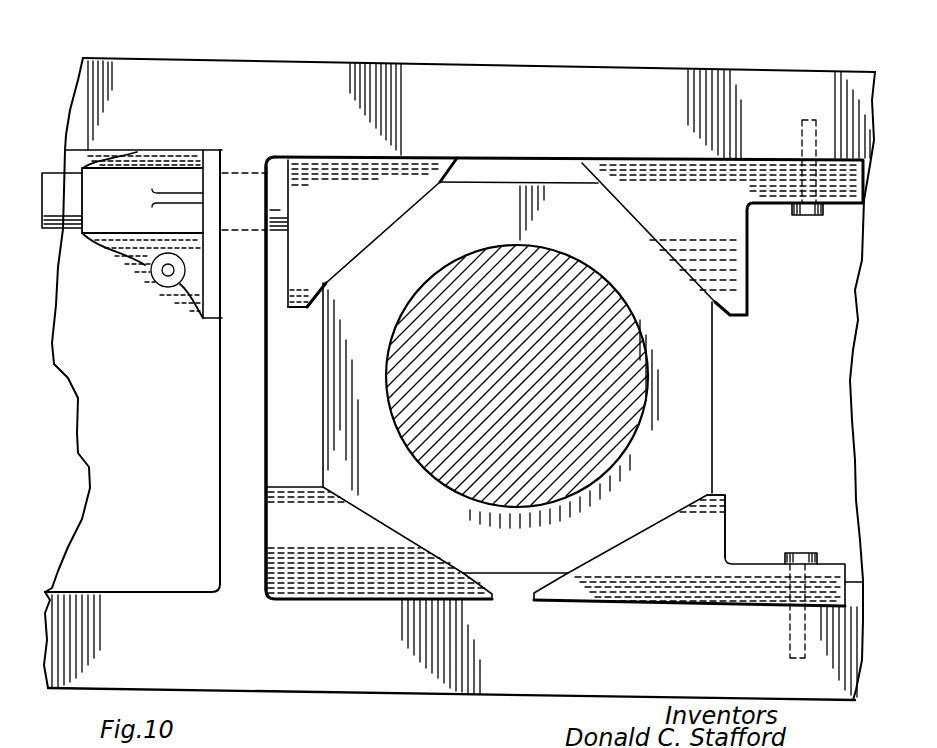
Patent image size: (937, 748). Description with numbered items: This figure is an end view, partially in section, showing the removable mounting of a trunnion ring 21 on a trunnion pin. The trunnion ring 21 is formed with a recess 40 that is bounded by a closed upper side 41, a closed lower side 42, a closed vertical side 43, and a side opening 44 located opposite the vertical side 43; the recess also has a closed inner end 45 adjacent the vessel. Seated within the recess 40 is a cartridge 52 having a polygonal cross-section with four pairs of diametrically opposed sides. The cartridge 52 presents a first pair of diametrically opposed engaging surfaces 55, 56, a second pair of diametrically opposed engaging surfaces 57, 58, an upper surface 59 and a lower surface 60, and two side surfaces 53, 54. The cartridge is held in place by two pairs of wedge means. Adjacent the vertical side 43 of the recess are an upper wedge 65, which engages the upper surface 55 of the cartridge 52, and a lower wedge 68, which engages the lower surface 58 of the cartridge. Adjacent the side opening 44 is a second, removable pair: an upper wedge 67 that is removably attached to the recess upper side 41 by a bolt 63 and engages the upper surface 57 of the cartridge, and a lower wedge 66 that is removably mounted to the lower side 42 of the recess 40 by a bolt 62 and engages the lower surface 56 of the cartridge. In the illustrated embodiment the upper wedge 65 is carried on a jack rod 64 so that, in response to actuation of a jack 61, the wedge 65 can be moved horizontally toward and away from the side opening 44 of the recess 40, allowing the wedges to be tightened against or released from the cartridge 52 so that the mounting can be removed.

The trunnion ring 21 is at (622, 66).
The recess 40 is at (286, 344).
The upper side of recess 41 is at (550, 166).
The lower side of recess 42 is at (503, 599).
The vertical side of recess 43 is at (265, 425).
The side opening of recess 44 is at (718, 475).
The closed inner end of recess 45 is at (300, 476).
The cartridge 52 is at (714, 394).
The side surface of cartridge 53 is at (322, 395).
The side surface of cartridge 54 is at (714, 355).
The engaging surface of cartridge 55 is at (398, 216).
The engaging surface of cartridge 56 is at (648, 530).
The engaging surface of cartridge 57 is at (633, 214).
The engaging surface of cartridge 58 is at (430, 556).
The upper surface of cartridge 59 is at (484, 184).
The lower surface of cartridge 60 is at (497, 575).
The jack 61 is at (132, 206).
The bolt 62 is at (795, 541).
The bolt 63 is at (805, 214).
The jack rod 64 is at (278, 186).
The upper wedge 65 is at (338, 211).
The lower wedge 66 is at (635, 584).
The upper wedge 67 is at (725, 202).
The lower wedge 68 is at (308, 552).